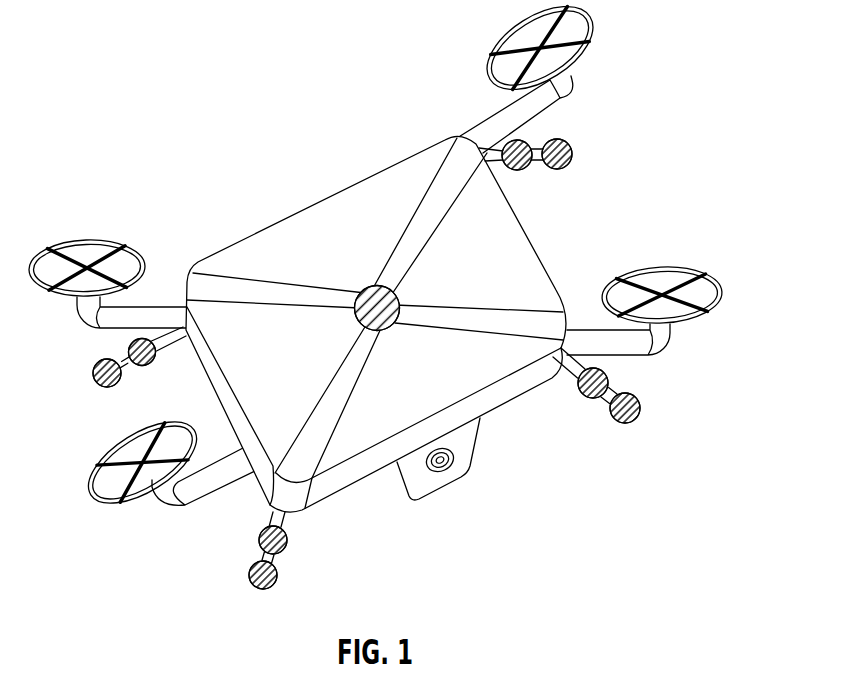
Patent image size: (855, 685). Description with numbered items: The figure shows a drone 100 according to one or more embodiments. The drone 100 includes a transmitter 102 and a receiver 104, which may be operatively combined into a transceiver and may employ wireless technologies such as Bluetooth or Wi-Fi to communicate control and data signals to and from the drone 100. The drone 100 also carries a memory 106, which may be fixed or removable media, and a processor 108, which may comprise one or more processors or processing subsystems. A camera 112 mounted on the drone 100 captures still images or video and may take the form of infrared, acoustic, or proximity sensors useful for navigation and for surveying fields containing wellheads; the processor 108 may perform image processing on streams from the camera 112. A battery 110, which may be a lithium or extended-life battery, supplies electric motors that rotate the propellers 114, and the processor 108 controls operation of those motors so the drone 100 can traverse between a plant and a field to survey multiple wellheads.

The drone 100 is at (414, 306).
The transmitter 102 is at (250, 571).
The receiver 104 is at (289, 543).
The memory 106 is at (375, 285).
The processor 108 is at (445, 396).
The battery 110 is at (507, 301).
The camera 112 is at (458, 457).
The propellers 114 is at (722, 292).